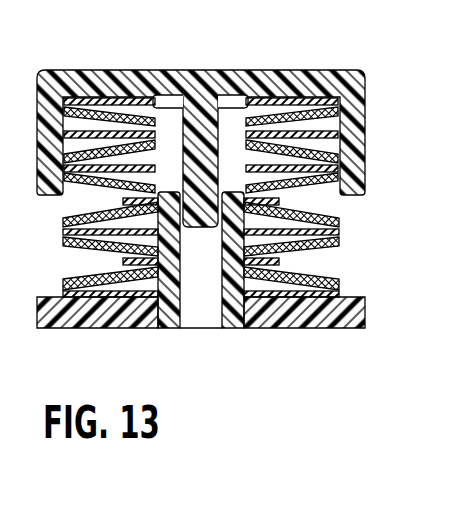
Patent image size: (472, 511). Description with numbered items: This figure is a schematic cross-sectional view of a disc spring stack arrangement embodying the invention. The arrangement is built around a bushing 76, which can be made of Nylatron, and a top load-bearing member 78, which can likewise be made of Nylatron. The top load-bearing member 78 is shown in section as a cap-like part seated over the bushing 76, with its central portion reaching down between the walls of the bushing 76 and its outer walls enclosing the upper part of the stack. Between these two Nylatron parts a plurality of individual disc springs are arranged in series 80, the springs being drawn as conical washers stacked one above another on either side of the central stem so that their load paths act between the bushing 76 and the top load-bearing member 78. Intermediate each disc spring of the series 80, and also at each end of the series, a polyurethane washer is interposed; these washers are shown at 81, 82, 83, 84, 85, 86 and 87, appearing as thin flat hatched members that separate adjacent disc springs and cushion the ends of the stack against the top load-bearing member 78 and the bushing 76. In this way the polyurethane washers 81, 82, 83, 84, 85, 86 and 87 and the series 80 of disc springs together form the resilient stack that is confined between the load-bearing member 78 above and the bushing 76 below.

The bushing 76 is at (244, 355).
The top load-bearing member 78 is at (252, 71).
The series of disc springs 80 is at (48, 250).
The polyurethane washer 81 is at (308, 101).
The polyurethane washer 82 is at (337, 126).
The polyurethane washer 83 is at (337, 160).
The polyurethane washer 84 is at (279, 200).
The polyurethane washer 85 is at (339, 232).
The polyurethane washer 86 is at (279, 262).
The polyurethane washer 87 is at (339, 289).